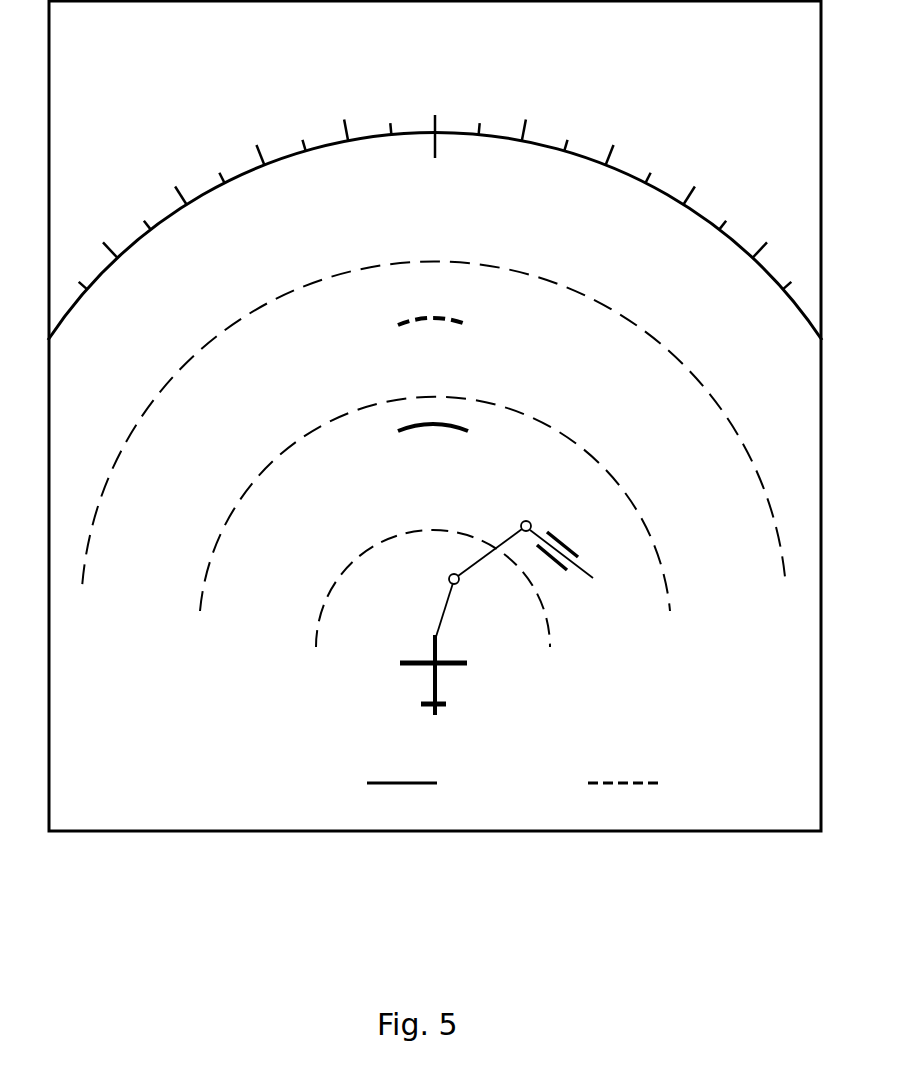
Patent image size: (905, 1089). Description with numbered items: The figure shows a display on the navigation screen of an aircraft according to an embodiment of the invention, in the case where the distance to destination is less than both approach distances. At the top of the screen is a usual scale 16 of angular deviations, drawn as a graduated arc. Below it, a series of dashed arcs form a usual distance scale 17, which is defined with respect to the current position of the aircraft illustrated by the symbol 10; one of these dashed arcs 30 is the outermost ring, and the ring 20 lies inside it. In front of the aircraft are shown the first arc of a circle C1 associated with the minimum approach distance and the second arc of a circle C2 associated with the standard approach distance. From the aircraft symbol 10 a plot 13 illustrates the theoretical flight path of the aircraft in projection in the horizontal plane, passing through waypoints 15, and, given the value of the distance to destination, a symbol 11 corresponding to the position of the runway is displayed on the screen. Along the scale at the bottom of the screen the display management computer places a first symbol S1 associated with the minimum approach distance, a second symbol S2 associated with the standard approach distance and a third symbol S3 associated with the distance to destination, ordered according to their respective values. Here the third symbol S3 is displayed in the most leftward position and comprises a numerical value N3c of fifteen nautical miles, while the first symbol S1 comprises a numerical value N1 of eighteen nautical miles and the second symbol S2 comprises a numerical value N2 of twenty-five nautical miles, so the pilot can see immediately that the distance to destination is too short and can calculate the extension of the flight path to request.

The scale of angular deviations 16 is at (681, 106).
The distance scale 17 is at (248, 487).
The outer range ring 30 is at (433, 422).
The central processing unit 20 is at (435, 504).
The waypoints 15 is at (523, 521).
The symbol corresponding to the position of the runway 11 is at (558, 530).
The plot 13 is at (590, 567).
The symbol representing the current position of the aircraft 10 is at (432, 682).
The first arc of a circle C1 is at (399, 427).
The second arc of a circle C2 is at (399, 323).
The third symbol S3 is at (175, 809).
The numerical value N3c is at (275, 809).
The first symbol S1 is at (400, 809).
The numerical value N1 is at (479, 809).
The second symbol S2 is at (624, 809).
The numerical value N2 is at (703, 809).